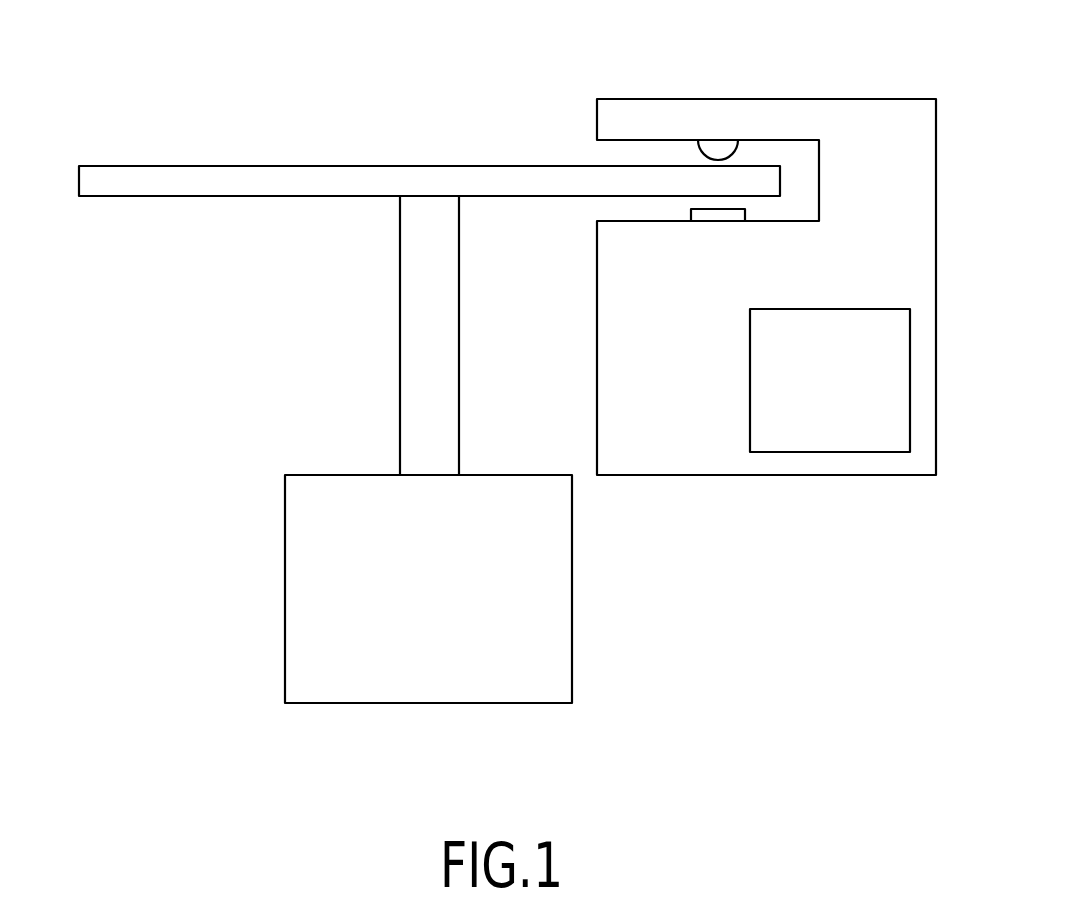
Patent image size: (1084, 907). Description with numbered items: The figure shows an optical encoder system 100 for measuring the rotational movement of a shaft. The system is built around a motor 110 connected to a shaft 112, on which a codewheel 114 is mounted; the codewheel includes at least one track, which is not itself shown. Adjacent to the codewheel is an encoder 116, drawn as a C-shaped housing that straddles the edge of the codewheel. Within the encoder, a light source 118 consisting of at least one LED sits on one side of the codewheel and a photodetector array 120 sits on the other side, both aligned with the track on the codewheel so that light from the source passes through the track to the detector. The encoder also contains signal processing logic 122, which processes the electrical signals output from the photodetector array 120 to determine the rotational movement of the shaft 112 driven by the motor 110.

The optical encoder system 100 is at (172, 49).
The motor 110 is at (285, 590).
The shaft 112 is at (400, 323).
The codewheel 114 is at (332, 166).
The encoder 116 is at (864, 99).
The light source 118 is at (700, 146).
The photodetector array 120 is at (691, 210).
The signal processing logic 122 is at (815, 309).